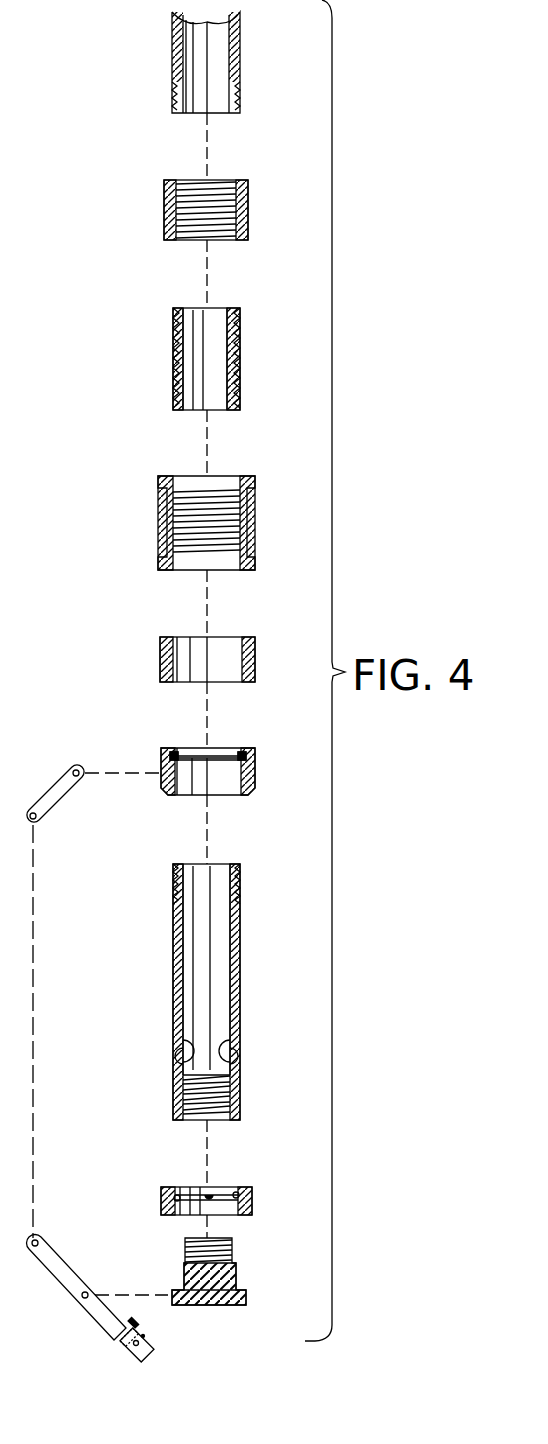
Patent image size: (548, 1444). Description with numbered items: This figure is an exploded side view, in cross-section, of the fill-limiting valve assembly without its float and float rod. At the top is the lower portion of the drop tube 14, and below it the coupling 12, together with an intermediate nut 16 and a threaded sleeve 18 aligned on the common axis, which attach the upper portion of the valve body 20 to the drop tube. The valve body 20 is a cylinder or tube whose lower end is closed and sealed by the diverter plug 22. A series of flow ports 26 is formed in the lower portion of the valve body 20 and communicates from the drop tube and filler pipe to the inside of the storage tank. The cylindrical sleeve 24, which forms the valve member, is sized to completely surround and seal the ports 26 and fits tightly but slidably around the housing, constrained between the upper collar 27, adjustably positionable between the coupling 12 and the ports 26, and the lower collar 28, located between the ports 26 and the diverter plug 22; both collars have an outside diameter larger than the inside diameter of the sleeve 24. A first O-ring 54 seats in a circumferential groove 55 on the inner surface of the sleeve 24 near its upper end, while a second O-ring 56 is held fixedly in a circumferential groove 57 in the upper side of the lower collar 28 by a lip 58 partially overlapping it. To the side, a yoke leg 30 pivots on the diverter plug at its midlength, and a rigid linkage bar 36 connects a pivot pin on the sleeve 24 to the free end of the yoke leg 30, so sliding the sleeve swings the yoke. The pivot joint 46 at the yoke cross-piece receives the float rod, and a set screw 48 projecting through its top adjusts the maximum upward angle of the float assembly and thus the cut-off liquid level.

The coupling 12 is at (247, 505).
The tube 14 is at (238, 50).
The threaded nut 16 is at (206, 210).
The threaded sleeve 18 is at (206, 359).
The valve body 20 is at (240, 945).
The diverter plug 22 is at (238, 1270).
The cylindrical sleeve 24 is at (258, 768).
The flow ports 26 is at (255, 1054).
The upper collar 27 is at (255, 652).
The lower collar 28 is at (252, 1203).
The yoke leg 30 is at (60, 1282).
The linkage bar 36 is at (46, 790).
The pivot joint 46 is at (147, 1344).
The set screw 48 is at (145, 1324).
The first O-ring 54 is at (172, 750).
The circumferential groove 55 is at (222, 748).
The second O-ring 56 is at (182, 1189).
The circumferential groove 57 is at (214, 1190).
The lip 58 is at (246, 790).